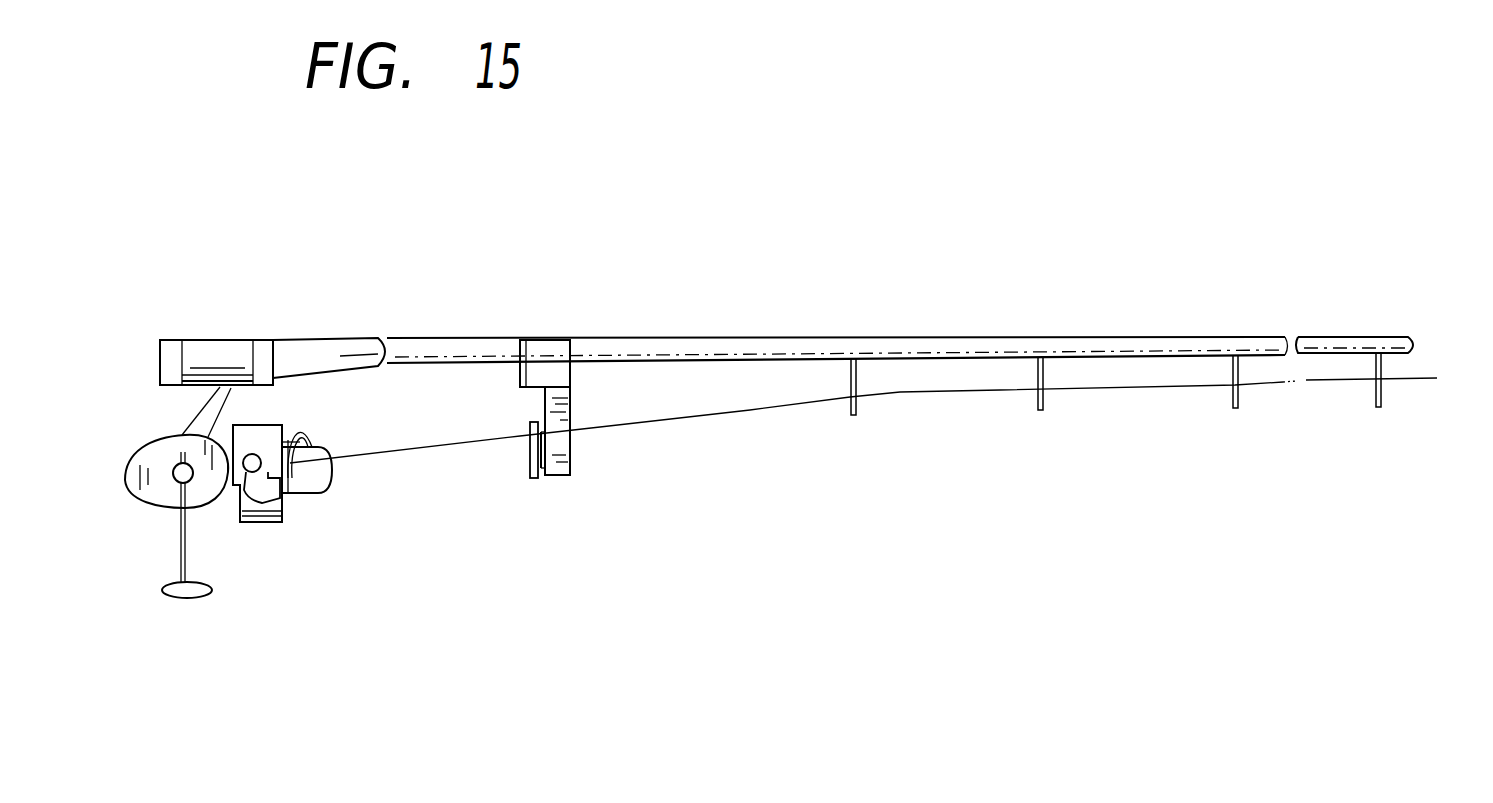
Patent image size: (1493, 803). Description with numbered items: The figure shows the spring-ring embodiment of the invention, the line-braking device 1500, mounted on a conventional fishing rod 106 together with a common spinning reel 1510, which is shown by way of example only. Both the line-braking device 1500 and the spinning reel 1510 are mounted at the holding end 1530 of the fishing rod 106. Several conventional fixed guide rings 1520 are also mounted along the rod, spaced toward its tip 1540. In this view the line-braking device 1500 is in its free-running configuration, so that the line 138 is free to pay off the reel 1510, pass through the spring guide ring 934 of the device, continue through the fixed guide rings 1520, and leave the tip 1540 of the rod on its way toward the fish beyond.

The fishing rod 106 is at (473, 340).
The line 138 is at (658, 422).
The spring guide ring 934 is at (532, 453).
The line-braking device 1500 is at (548, 509).
The spinning reel 1510 is at (262, 538).
The fixed guide rings 1520 is at (858, 416).
The holding end 1530 is at (158, 354).
The tip 1540 is at (1416, 345).